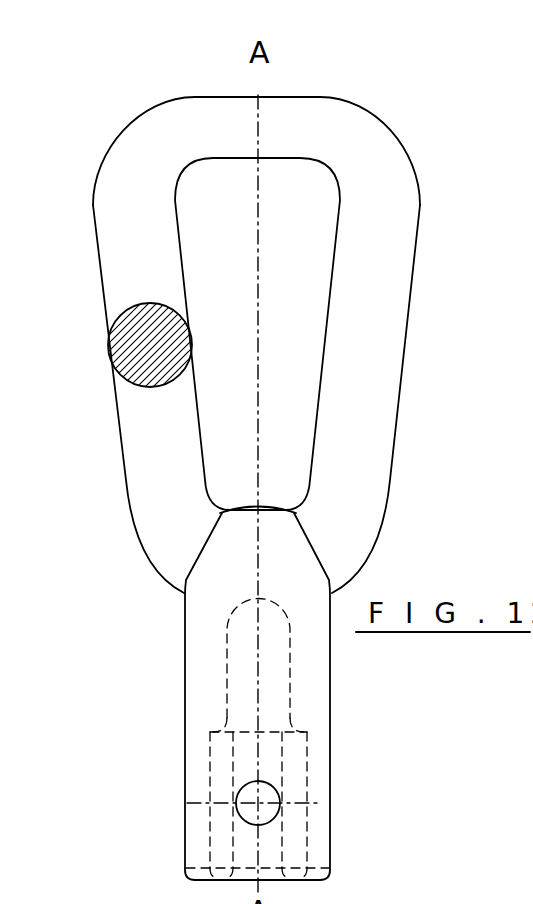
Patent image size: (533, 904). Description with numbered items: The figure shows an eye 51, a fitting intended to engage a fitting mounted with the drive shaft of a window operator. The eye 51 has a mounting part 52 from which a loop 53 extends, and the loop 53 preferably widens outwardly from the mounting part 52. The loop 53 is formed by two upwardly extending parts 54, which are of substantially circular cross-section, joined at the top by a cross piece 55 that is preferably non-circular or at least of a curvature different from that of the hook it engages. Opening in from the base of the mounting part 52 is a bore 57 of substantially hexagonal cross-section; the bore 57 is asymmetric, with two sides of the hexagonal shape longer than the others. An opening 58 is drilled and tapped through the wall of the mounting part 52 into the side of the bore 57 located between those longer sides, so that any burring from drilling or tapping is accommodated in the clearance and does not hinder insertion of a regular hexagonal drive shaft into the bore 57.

The eye 51 is at (389, 118).
The mounting part 52 is at (315, 668).
The loop 53 is at (405, 352).
The upwardly extending parts 54 is at (370, 413).
The cross piece 55 is at (285, 130).
The bore 57 is at (297, 787).
The opening 58 is at (245, 797).